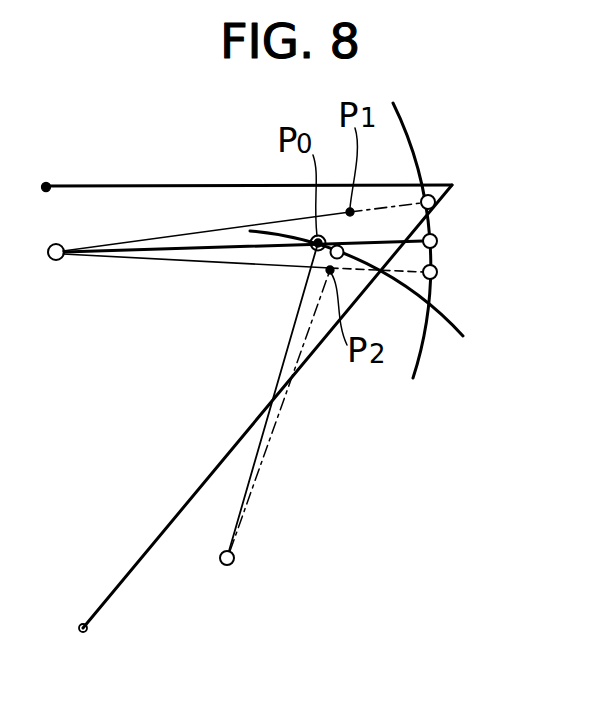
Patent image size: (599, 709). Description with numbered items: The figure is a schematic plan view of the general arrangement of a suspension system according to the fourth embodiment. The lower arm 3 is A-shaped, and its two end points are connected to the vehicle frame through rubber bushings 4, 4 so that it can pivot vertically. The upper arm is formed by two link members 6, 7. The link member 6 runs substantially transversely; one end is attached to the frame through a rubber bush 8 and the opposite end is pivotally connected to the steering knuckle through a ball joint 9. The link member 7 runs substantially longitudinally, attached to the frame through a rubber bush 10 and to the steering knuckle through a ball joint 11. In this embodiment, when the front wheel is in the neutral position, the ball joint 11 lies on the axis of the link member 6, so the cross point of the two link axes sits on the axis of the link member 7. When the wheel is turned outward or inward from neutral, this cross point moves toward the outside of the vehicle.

The lower arm 3 is at (147, 555).
The rubber bushing 4 is at (46, 182).
The link member 6 is at (212, 244).
The link member 7 is at (288, 360).
The rubber bush 8 is at (59, 261).
The ball joint 9 is at (438, 239).
The rubber bush 10 is at (235, 556).
The ball joint 11 is at (310, 249).